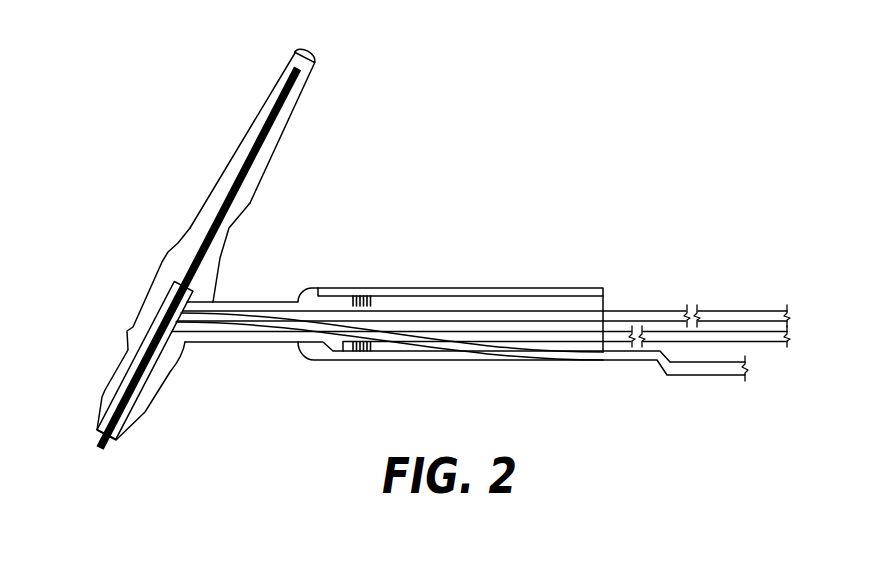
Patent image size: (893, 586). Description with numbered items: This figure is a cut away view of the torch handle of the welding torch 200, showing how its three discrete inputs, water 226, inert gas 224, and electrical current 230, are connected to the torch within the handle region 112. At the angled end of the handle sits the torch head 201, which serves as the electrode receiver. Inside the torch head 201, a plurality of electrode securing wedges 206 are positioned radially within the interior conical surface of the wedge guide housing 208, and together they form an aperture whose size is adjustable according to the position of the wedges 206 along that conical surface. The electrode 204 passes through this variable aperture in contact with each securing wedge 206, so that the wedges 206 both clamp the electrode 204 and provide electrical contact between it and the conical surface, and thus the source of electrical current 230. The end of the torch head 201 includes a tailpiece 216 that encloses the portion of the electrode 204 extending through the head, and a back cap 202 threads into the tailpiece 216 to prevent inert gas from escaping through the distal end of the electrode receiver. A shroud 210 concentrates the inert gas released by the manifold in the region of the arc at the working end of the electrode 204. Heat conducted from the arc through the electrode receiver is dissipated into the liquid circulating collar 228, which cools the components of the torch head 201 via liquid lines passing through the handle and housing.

The torch 200 is at (542, 138).
The torch head 201 is at (143, 142).
The back cap 202 is at (317, 52).
The electrode 204 is at (246, 162).
The electrode securing wedges 206 is at (171, 297).
The wedge guide housing 208 is at (161, 311).
The shroud 210 is at (114, 370).
The tailpiece 216 is at (278, 145).
The handle region 112 is at (445, 288).
The inert gas input 224 is at (637, 362).
The water input 226 is at (635, 310).
The circulating collar 228 is at (365, 292).
The electrical current input 230 is at (763, 344).